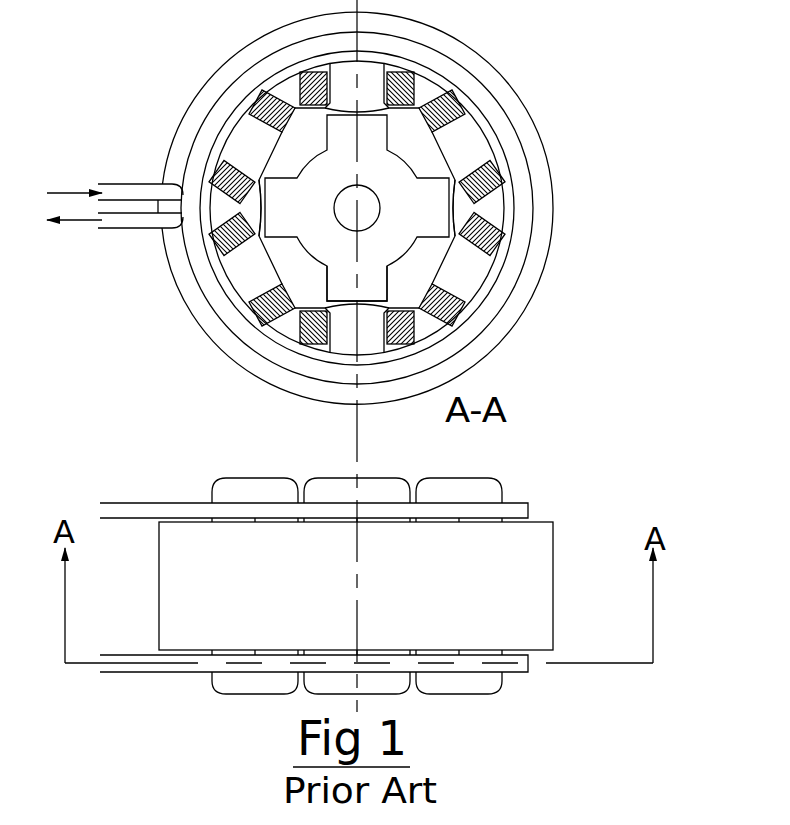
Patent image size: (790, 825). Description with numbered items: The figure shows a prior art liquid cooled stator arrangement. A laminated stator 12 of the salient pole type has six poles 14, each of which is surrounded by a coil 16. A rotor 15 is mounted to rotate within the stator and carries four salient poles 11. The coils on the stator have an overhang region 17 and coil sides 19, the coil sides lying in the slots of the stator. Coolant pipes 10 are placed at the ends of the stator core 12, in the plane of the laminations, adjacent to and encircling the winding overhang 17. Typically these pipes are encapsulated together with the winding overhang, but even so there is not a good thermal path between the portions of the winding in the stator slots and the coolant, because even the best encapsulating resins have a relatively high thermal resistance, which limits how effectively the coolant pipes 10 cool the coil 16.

The coolant pipes 10 is at (493, 120).
The salient poles 11 is at (338, 285).
The laminated stator 12 is at (553, 180).
The poles 14 is at (237, 143).
The rotor 15 is at (318, 222).
The coil 16 is at (233, 474).
The overhang region 17 is at (253, 500).
The coil sides 19 is at (410, 68).